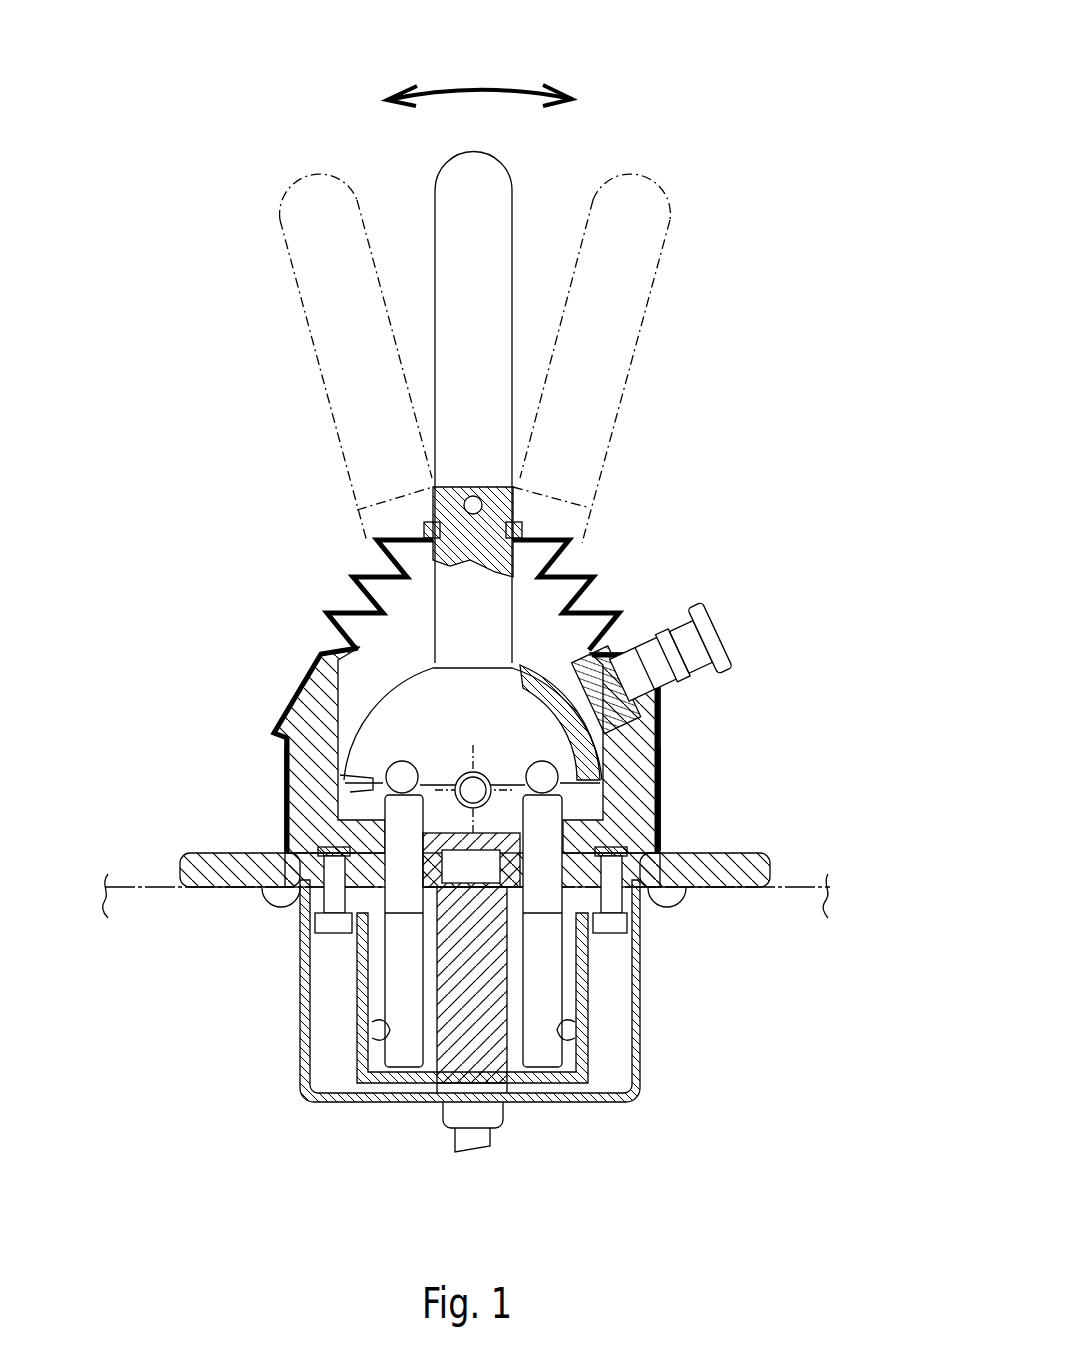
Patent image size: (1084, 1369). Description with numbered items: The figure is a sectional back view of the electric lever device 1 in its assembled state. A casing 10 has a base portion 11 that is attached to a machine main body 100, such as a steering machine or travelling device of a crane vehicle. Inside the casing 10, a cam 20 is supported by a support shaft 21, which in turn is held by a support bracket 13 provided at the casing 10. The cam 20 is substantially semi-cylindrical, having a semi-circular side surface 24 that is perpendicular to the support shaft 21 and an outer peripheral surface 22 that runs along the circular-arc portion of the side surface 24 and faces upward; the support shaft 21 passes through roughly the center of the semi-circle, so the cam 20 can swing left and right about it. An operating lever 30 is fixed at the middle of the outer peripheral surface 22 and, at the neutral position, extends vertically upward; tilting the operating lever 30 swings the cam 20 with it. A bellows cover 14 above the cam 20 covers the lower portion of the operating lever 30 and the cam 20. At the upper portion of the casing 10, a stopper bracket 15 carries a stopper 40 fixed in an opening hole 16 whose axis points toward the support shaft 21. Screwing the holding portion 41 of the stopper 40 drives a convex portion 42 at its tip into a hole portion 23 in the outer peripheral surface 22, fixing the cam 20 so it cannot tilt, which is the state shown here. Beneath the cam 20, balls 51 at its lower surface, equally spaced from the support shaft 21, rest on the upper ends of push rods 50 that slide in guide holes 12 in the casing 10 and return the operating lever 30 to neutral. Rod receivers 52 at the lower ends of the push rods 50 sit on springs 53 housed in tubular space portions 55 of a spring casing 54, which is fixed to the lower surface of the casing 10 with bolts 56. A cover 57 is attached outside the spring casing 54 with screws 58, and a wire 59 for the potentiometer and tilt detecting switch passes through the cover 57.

The electric lever device 1 is at (808, 114).
The casing 10 is at (260, 850).
The base portion 11 is at (207, 857).
The guide holes 12 is at (312, 935).
The support bracket 13 is at (287, 767).
The bellows cover 14 is at (602, 645).
The stopper bracket 15 is at (658, 750).
The opening hole 16 is at (670, 717).
The cam 20 is at (428, 696).
The support shaft 21 is at (343, 697).
The outer peripheral surface 22 is at (537, 627).
The hole portion 23 is at (567, 697).
The side surface 24 is at (460, 765).
The operating lever 30 is at (329, 190).
The stopper 40 is at (663, 620).
The holding portion 41 is at (720, 627).
The convex portion 42 is at (657, 773).
The push rods 50 is at (303, 1017).
The balls 51 is at (292, 717).
The rod receivers 52 is at (300, 1057).
The springs 53 is at (353, 1100).
The spring casing 54 is at (513, 1093).
The tubular space portions 55 is at (307, 1093).
The bolts 56 is at (343, 945).
The cover 57 is at (400, 1100).
The screws 58 is at (267, 903).
The wire 59 is at (480, 1147).
The machine main body 100 is at (808, 880).